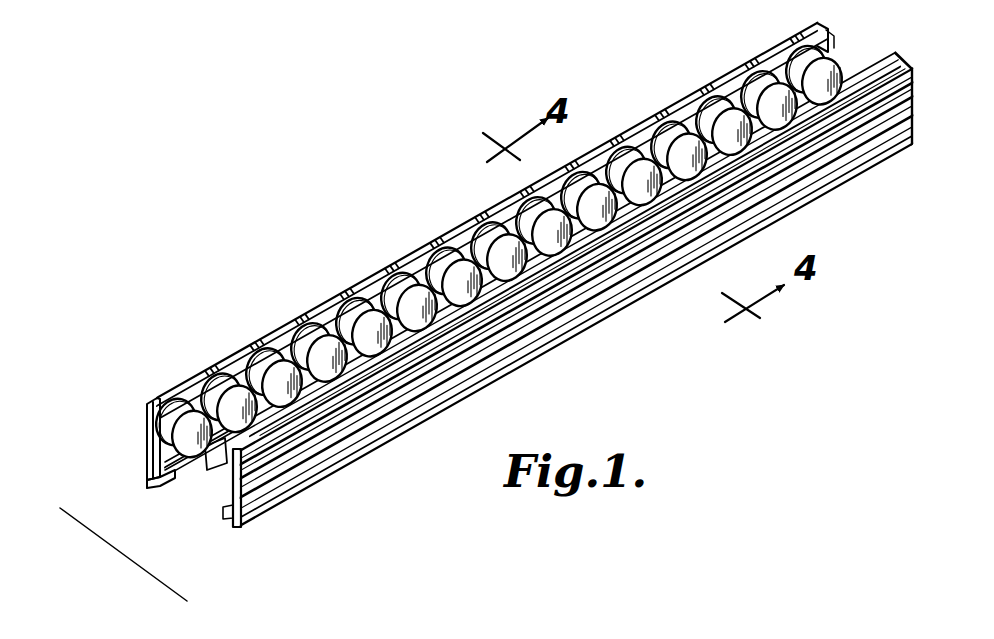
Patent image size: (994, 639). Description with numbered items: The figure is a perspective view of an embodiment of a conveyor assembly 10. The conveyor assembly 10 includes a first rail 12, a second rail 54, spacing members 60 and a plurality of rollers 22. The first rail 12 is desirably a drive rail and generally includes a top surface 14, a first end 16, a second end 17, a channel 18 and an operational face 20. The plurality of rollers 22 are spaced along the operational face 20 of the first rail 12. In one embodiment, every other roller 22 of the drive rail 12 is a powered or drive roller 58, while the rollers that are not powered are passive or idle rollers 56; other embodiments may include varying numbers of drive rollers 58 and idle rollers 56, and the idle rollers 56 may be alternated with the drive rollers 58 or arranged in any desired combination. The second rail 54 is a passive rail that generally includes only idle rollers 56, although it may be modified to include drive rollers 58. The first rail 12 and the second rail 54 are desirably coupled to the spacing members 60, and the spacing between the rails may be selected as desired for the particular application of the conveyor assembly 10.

The conveyor assembly 10 is at (398, 466).
The first rail 12 is at (592, 150).
The top surface 14 is at (670, 112).
The first end 16 is at (160, 427).
The second end 17 is at (832, 44).
The channel 18 is at (157, 477).
The operational face 20 is at (383, 293).
The rollers 22 is at (447, 266).
The second rail 54 is at (470, 373).
The idle rollers 56 is at (338, 333).
The drive rollers 58 is at (180, 413).
The spacing members 60 is at (213, 452).